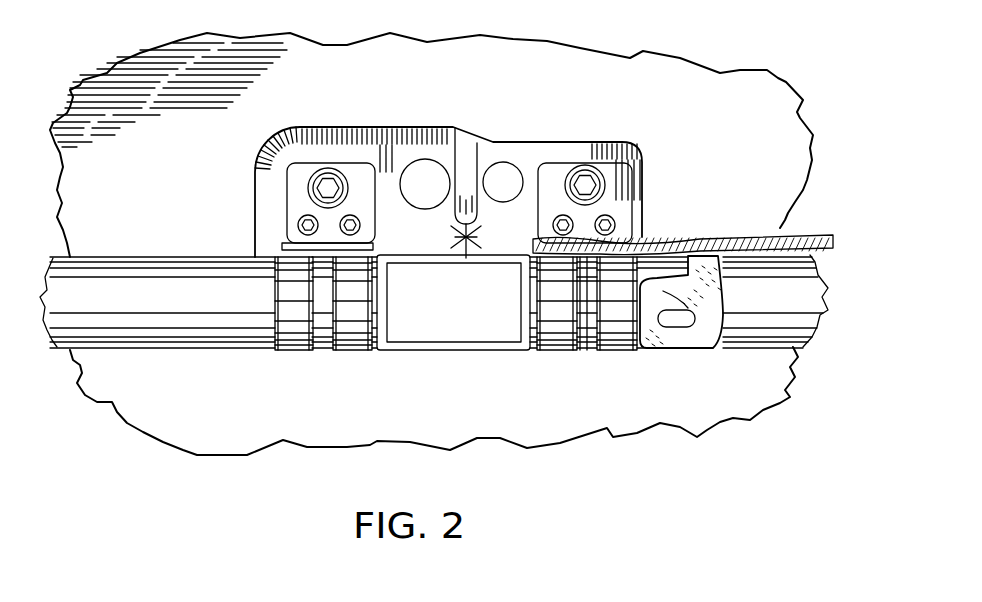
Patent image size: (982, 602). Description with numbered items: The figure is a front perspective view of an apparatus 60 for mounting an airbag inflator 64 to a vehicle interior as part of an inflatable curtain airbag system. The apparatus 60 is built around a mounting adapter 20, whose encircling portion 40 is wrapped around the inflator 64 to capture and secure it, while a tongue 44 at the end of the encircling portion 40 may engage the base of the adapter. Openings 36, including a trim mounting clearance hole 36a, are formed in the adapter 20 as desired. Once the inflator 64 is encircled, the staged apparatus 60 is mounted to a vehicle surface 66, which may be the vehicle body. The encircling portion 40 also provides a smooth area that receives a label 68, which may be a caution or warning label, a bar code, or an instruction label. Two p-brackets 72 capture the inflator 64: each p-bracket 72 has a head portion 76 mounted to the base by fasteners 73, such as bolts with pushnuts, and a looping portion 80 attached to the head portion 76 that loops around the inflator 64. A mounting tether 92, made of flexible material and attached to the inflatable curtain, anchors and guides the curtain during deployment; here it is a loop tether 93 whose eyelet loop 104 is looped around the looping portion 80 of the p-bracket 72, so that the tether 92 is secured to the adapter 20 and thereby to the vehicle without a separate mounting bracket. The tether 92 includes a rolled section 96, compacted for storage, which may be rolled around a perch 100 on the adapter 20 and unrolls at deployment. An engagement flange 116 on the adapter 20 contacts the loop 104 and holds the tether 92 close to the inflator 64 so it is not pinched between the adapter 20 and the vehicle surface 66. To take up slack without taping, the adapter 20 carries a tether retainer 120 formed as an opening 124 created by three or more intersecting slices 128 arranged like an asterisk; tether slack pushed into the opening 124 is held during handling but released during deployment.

The mounting adapter 20 is at (626, 141).
The openings 36 is at (438, 160).
The trim mounting clearance hole 36a is at (524, 170).
The encircling portion 40 is at (541, 305).
The tongue 44 is at (355, 185).
The apparatus 60 is at (283, 357).
The airbag inflator 64 is at (657, 252).
The vehicle surface 66 is at (524, 83).
The label 68 is at (458, 318).
The p-bracket 72 is at (293, 187).
The fasteners 73 is at (328, 167).
The head portion 76 is at (297, 210).
The looping portion 80 is at (348, 323).
The mounting tether 92 is at (723, 285).
The loop tether 93 is at (750, 237).
The rolled section 96 is at (695, 319).
The perch 100 is at (677, 318).
The eyelet loop 104 is at (587, 330).
The engagement flange 116 is at (285, 240).
The tether retainer 120 is at (477, 155).
The opening 124 is at (460, 234).
The slices 128 is at (455, 150).